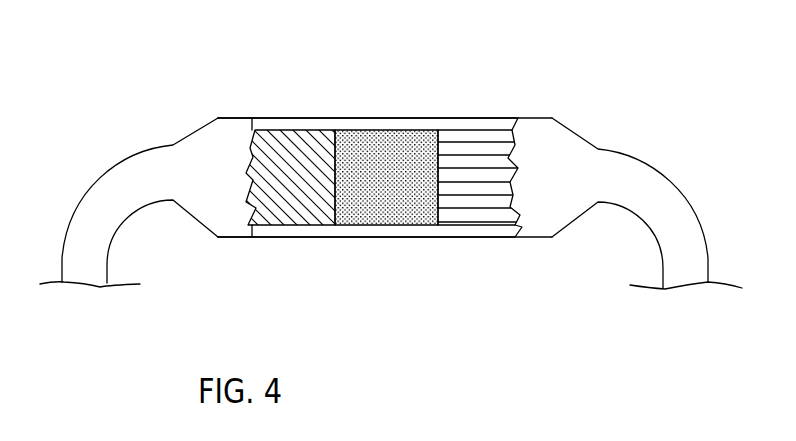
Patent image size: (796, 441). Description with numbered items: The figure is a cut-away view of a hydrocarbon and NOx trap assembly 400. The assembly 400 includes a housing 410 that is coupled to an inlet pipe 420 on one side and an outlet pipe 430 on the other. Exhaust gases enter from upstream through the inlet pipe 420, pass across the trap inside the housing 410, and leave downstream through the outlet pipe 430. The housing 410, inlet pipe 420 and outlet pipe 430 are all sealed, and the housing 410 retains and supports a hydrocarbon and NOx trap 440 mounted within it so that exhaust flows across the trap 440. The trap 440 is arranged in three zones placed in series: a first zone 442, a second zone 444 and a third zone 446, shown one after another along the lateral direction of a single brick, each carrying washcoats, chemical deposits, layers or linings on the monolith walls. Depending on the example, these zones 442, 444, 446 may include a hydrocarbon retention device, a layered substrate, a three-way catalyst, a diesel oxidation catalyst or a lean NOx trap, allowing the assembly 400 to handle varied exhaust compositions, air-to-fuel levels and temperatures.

The hydrocarbon and NOx trap assembly 400 is at (116, 50).
The housing 410 is at (452, 118).
The inlet pipe 420 is at (95, 185).
The outlet pipe 430 is at (670, 179).
The hydrocarbon and NOx trap 440 is at (385, 120).
The first zone 442 is at (303, 207).
The second zone 444 is at (398, 208).
The third zone 446 is at (490, 208).